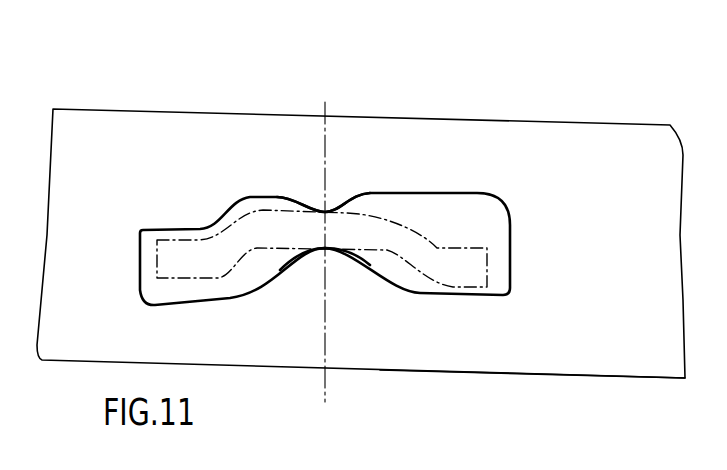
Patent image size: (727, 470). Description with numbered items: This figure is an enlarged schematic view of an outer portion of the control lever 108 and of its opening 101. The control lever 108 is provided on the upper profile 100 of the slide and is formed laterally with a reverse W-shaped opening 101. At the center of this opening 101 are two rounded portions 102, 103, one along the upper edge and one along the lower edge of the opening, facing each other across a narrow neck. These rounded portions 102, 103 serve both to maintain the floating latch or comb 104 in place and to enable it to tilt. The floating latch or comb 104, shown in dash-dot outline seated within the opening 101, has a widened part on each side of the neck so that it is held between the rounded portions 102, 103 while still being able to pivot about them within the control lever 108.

The upper profile 100 is at (401, 145).
The reverse W-shaped opening 101 is at (146, 230).
The rounded portion 102 is at (328, 251).
The rounded portion 103 is at (318, 210).
The floating latch or comb 104 is at (403, 237).
The control lever 108 is at (496, 352).